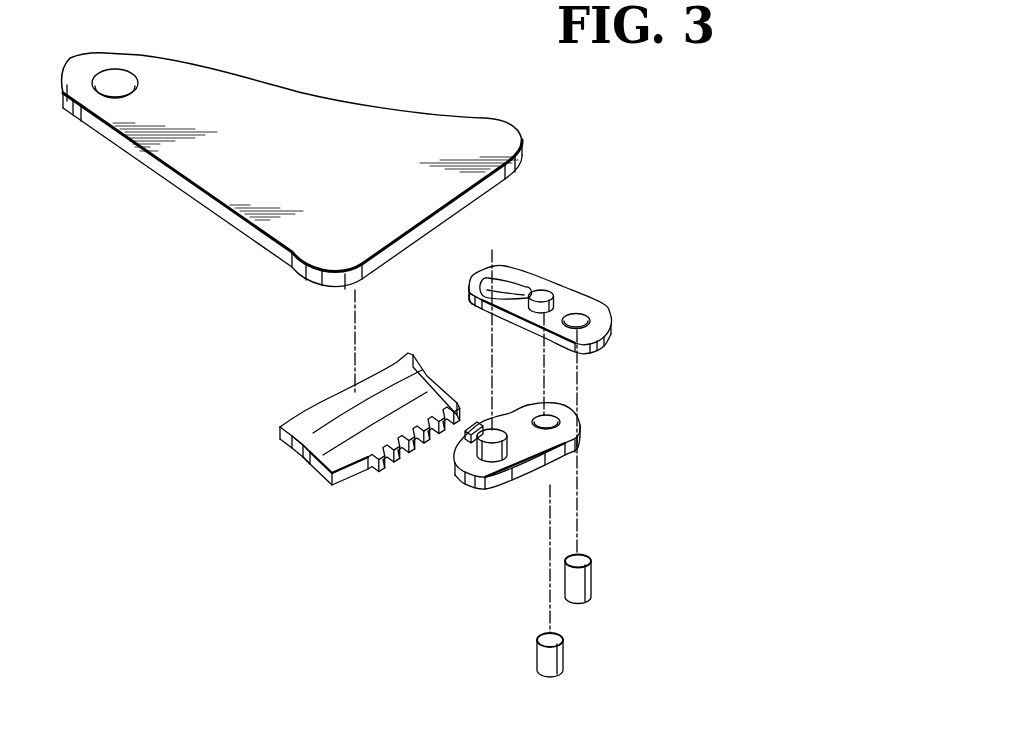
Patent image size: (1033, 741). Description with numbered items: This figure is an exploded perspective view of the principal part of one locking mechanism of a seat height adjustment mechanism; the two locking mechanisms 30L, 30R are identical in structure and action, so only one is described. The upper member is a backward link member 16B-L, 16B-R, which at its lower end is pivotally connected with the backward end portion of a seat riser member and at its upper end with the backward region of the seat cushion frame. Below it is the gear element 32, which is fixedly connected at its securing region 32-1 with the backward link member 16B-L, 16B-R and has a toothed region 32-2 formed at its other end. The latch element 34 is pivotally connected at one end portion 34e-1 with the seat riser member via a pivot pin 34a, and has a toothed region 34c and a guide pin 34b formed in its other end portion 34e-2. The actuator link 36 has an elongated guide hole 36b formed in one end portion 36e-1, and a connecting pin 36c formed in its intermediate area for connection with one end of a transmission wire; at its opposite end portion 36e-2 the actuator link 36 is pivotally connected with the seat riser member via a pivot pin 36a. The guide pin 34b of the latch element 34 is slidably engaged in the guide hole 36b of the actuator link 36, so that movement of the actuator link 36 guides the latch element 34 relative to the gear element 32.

The right-side backward link member 16B-R is at (313, 93).
The left-side backward link member 16B-L is at (292, 155).
The right-side locking mechanism 30R is at (680, 248).
The left-side locking mechanism 30L is at (621, 443).
The gear element 32 is at (322, 416).
The securing region 32-1 is at (393, 373).
The toothed region 32-2 is at (327, 462).
The latch element 34 is at (518, 475).
The pivot pin 34a is at (542, 665).
The guide pin 34b is at (487, 453).
The toothed region 34c is at (471, 426).
The one end portion 34e-1 is at (580, 413).
The another end portion 34e-2 is at (470, 483).
The actuator link 36 is at (599, 312).
The pivot pin 36a is at (591, 577).
The elongated guide hole 36b is at (512, 283).
The connecting pin 36c is at (546, 290).
The end portion 36e-1 is at (602, 347).
The second link lower hole 36e-2 is at (472, 278).